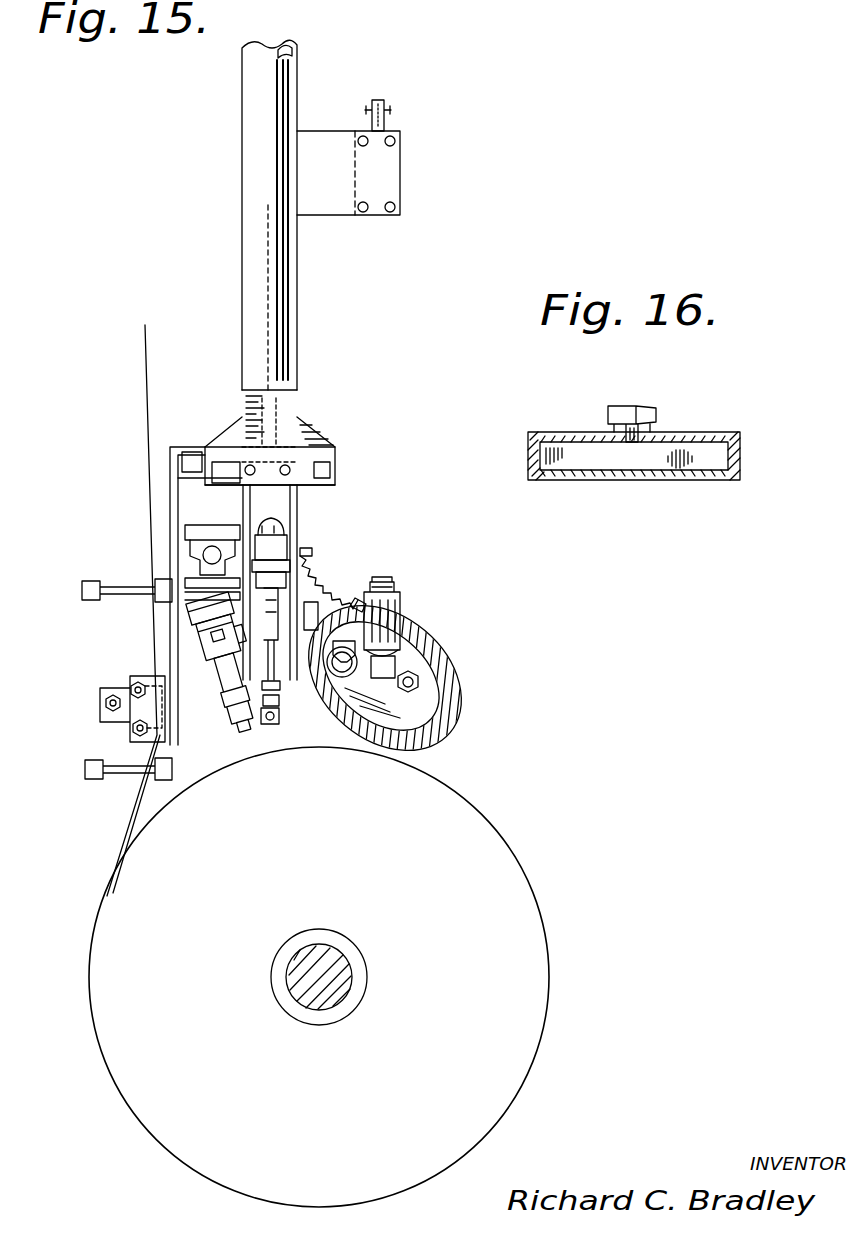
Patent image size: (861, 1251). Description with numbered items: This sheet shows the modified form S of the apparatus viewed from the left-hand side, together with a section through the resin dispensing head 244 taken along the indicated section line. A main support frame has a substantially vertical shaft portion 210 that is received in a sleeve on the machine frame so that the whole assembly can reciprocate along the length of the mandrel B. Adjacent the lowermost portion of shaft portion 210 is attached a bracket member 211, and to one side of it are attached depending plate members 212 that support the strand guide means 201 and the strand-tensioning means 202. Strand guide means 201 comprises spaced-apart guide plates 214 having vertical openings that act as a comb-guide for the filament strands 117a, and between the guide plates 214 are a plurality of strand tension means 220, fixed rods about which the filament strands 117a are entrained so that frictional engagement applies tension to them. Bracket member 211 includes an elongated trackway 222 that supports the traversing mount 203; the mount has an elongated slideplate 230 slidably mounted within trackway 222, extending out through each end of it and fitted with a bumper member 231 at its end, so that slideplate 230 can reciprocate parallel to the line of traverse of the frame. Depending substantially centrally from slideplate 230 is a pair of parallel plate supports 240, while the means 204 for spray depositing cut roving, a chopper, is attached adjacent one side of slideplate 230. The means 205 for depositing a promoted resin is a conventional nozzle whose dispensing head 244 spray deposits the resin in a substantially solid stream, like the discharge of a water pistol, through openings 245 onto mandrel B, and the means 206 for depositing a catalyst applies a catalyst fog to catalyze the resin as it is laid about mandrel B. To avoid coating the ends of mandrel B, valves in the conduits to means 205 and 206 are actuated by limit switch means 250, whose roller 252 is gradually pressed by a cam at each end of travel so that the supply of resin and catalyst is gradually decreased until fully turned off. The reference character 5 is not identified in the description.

In FIG. 15, the web tensioning and splicing assembly 5 is at (386, 324).
In FIG. 15, the mandrel B is at (523, 846).
In FIG. 15, the filament strands 117a is at (145, 428).
In FIG. 15, the strand guide means 201 is at (73, 594).
In FIG. 15, the strand-tensioning means 202 is at (85, 714).
In FIG. 15, the traversing mount 203 is at (354, 448).
In FIG. 15, the means for spray depositing cut roving 204 is at (431, 634).
In FIG. 15, the means for depositing a promoted resin 205 is at (297, 630).
In FIG. 15, the means for depositing a catalyst 206 is at (190, 673).
In FIG. 15, the vertical shaft portion 210 is at (244, 236).
In FIG. 15, the bracket member 211 is at (298, 425).
In FIG. 15, the depending plate members 212 is at (172, 490).
In FIG. 15, the guide plates 214 is at (110, 583).
In FIG. 15, the strand tension means 220 is at (135, 688).
In FIG. 15, the elongated trackway 222 is at (325, 473).
In FIG. 15, the elongated slideplate 230 is at (228, 470).
In FIG. 15, the bumper member 231 is at (290, 402).
In FIG. 15, the parallel plate supports 240 is at (292, 517).
In FIG. 15, the dispensing head 244 is at (268, 724).
In FIG. 16, the dispensing head 244 is at (716, 437).
In FIG. 16, the openings 245 is at (614, 481).
In FIG. 15, the limit switch means 250 is at (348, 192).
In FIG. 15, the roller 252 is at (380, 100).